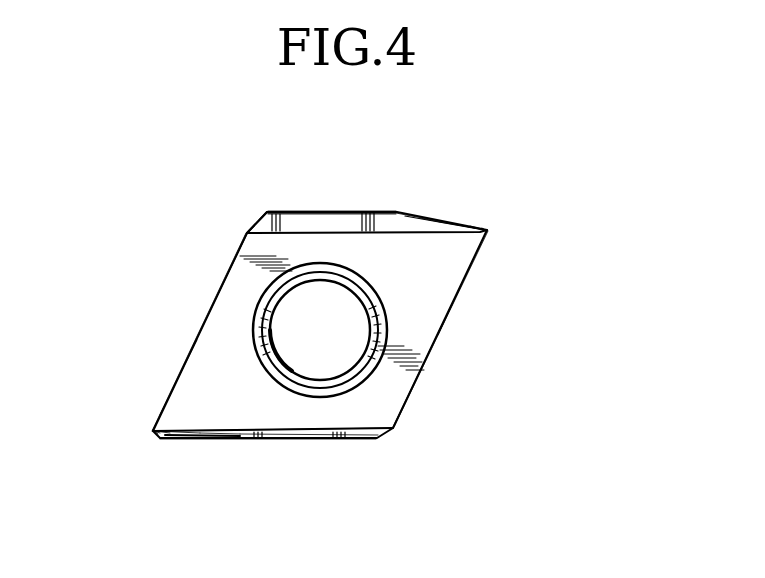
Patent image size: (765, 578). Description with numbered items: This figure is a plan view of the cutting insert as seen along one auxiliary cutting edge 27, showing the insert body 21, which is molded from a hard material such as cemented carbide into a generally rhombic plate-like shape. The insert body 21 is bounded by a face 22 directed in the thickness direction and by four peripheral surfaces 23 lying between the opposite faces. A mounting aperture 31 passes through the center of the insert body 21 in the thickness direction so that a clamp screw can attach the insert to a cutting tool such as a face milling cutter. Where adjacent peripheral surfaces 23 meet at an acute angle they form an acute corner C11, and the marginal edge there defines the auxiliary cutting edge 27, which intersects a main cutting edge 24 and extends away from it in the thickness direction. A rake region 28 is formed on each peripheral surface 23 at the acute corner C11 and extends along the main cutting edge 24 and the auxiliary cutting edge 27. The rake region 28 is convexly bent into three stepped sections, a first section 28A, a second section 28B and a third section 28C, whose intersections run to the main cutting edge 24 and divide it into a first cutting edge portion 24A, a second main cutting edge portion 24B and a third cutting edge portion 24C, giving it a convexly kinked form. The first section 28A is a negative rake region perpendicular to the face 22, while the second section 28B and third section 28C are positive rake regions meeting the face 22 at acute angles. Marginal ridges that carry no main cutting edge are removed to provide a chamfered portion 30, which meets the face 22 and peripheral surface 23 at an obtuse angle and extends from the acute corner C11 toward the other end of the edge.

The insert body 21 is at (600, 131).
The face 22 is at (300, 247).
The peripheral surface 23 is at (340, 206).
The main cutting edge 24 is at (585, 270).
The first cutting edge portion 24A is at (480, 256).
The second main cutting edge portion 24B is at (466, 289).
The third cutting edge portion 24C is at (452, 326).
The auxiliary cutting edge 27 is at (488, 232).
The rake region 28 is at (583, 152).
The first section 28A is at (478, 213).
The second section 28B is at (441, 228).
The third section 28C is at (390, 220).
The chamfered portion 30 is at (462, 238).
The mounting aperture 31 is at (378, 308).
The acute corner C11 is at (496, 218).